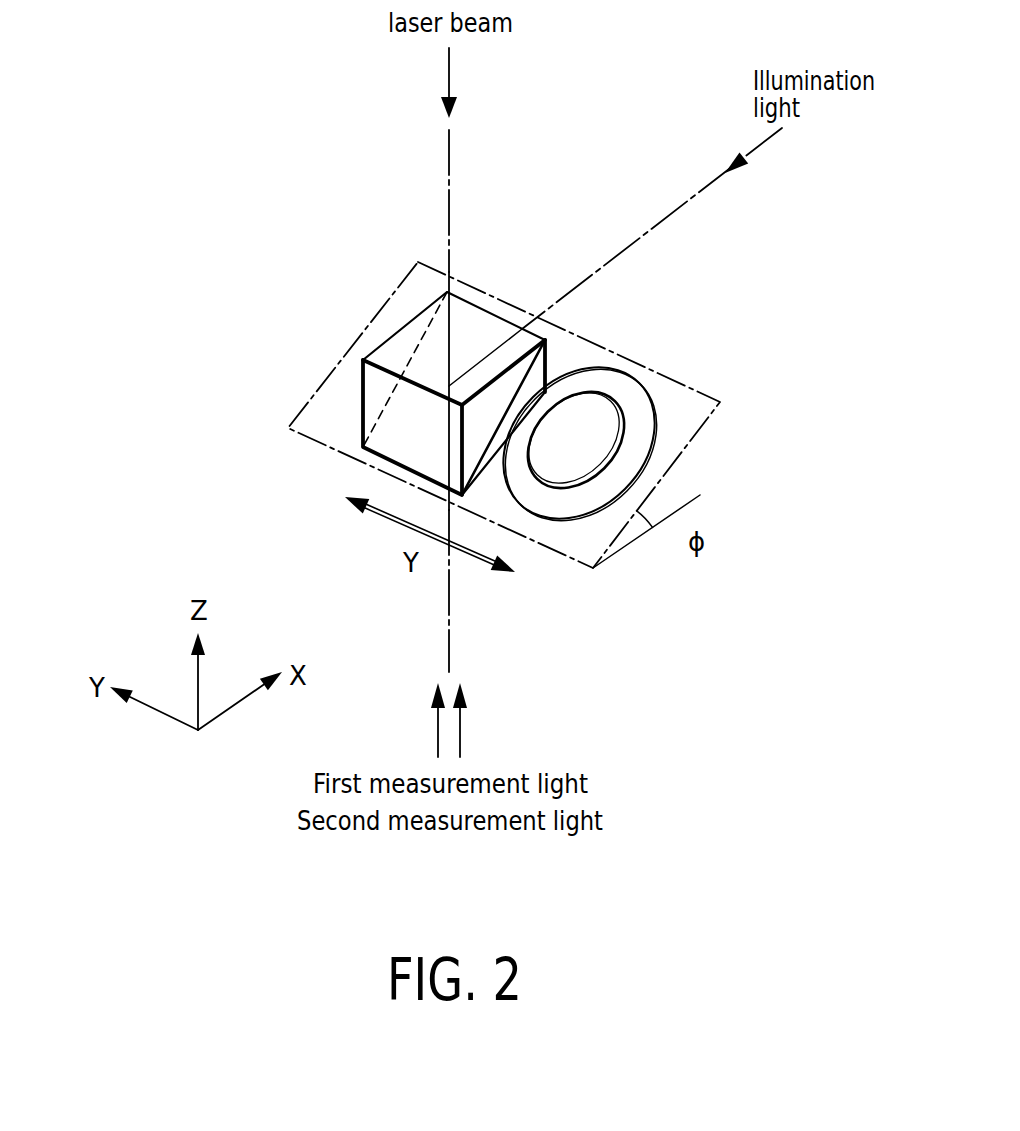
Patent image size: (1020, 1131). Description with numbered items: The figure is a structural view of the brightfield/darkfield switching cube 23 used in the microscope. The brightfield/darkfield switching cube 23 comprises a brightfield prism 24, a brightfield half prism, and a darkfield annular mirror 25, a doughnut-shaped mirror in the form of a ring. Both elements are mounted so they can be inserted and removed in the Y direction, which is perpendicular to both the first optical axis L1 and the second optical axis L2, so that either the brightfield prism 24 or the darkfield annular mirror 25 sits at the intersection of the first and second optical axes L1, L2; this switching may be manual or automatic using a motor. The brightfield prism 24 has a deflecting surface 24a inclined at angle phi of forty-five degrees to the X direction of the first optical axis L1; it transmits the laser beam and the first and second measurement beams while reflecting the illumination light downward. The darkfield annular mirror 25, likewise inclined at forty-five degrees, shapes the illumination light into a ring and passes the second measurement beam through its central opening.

The brightfield/darkfield switching cube 23 is at (297, 413).
The brightfield prism 24 is at (363, 390).
The deflecting surface 24a is at (527, 373).
The darkfield annular mirror 25 is at (632, 436).
The first optical axis L1 is at (628, 248).
The second optical axis L2 is at (448, 180).